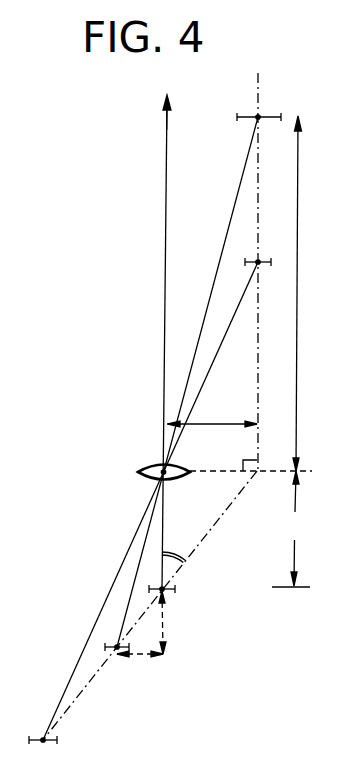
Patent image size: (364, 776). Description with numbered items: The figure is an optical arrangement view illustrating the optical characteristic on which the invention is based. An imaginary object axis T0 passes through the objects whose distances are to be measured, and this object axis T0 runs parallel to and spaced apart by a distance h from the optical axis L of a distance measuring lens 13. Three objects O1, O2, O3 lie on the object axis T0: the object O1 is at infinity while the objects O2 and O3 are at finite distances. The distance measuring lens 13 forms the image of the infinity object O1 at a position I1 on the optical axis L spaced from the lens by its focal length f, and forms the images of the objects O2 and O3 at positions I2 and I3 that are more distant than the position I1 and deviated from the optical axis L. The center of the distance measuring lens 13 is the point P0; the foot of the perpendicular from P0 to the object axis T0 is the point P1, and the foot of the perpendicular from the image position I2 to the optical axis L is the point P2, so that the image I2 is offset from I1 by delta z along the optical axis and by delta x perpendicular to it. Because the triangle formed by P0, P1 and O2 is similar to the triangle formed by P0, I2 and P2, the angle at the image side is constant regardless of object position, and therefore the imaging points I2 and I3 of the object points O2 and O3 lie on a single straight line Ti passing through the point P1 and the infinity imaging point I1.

The distance measuring lens 13 is at (145, 474).
The optical axis L is at (165, 332).
The object lying at infinity O1 is at (179, 101).
The object at finite distance O2 is at (203, 367).
The object at finite distance O3 is at (165, 489).
The object axis T0 is at (258, 378).
The straight line through imaging points Ti is at (196, 547).
The object distance a is at (297, 320).
The focal length f is at (291, 529).
The distance between object axis and optical axis h is at (212, 436).
The center of the distance measuring lens P0 is at (162, 470).
The foot of the perpendicular to the object axis P1 is at (257, 471).
The foot of the perpendicular to the optical axis P2 is at (166, 656).
The image position of the infinity object I1 is at (161, 586).
The image position of object O2 I2 is at (116, 645).
The image position of object O3 I3 is at (42, 738).